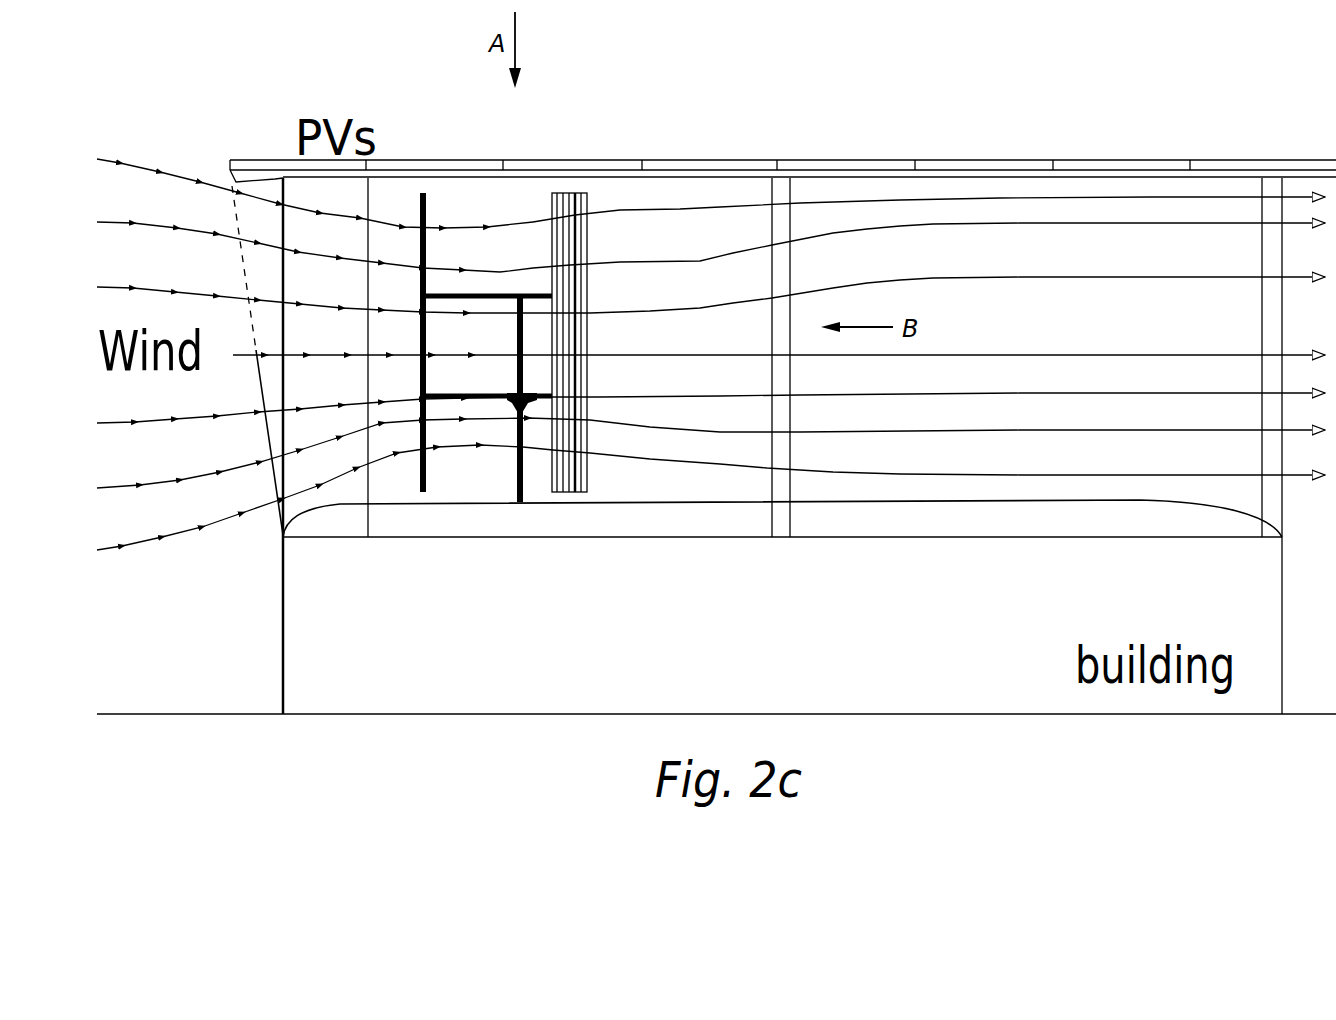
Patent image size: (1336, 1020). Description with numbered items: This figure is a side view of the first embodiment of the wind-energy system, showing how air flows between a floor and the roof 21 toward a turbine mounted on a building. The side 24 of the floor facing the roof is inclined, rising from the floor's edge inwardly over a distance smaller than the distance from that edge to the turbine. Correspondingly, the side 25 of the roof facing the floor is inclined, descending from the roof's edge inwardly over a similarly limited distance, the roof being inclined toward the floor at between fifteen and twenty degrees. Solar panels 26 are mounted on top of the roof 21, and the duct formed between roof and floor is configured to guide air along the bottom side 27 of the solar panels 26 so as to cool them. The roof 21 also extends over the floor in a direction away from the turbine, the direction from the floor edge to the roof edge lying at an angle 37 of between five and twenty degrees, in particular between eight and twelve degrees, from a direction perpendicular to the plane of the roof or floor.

The roof 21 is at (428, 170).
The side of the floor facing the roof 24 is at (329, 505).
The side of the roof facing the floor 25 is at (232, 186).
The solar panels 26 is at (485, 168).
The bottom side of the solar panels 27 is at (590, 217).
The angle 37 is at (283, 383).